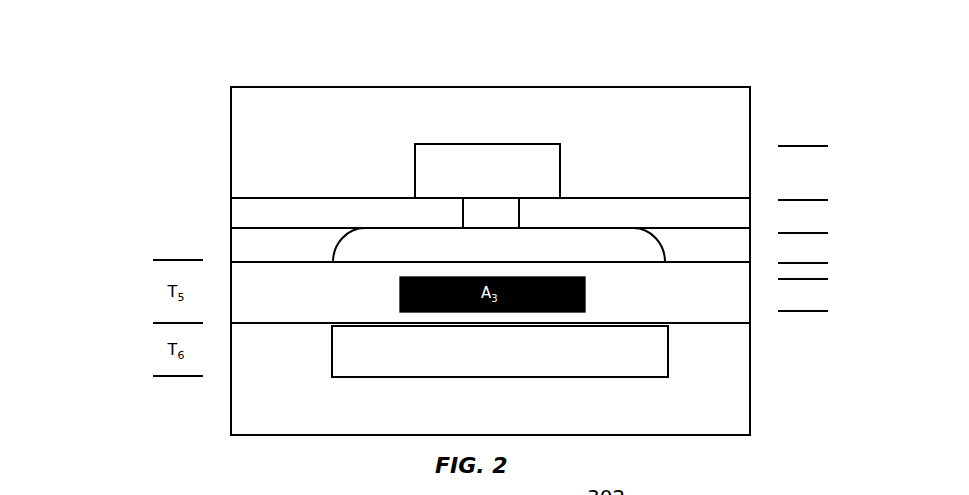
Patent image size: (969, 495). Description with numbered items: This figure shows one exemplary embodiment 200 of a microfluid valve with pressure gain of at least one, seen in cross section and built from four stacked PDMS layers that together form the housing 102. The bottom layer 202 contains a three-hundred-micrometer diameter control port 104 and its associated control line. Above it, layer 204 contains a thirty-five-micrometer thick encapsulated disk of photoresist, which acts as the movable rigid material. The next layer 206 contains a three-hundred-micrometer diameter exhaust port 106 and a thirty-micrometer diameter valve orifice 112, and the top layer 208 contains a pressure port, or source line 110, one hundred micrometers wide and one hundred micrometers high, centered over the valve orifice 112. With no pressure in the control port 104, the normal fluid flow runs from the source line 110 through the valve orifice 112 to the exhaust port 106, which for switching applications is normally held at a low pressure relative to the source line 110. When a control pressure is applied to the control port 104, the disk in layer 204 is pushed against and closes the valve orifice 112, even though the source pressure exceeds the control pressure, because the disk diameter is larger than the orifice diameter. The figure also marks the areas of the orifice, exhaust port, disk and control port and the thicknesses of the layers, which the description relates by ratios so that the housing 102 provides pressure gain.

The exemplary embodiment 200 is at (113, 80).
The layer 202 is at (231, 378).
The layer 204 is at (231, 263).
The layer 206 is at (231, 215).
The layer 208 is at (231, 157).
The microfluid pressure port (source line) 110 is at (512, 143).
The microfluid valve orifice 112 is at (521, 215).
The microfluid exhaust port 106 is at (600, 232).
The microfluid control port 104 is at (668, 350).
The housing 102 is at (780, 128).